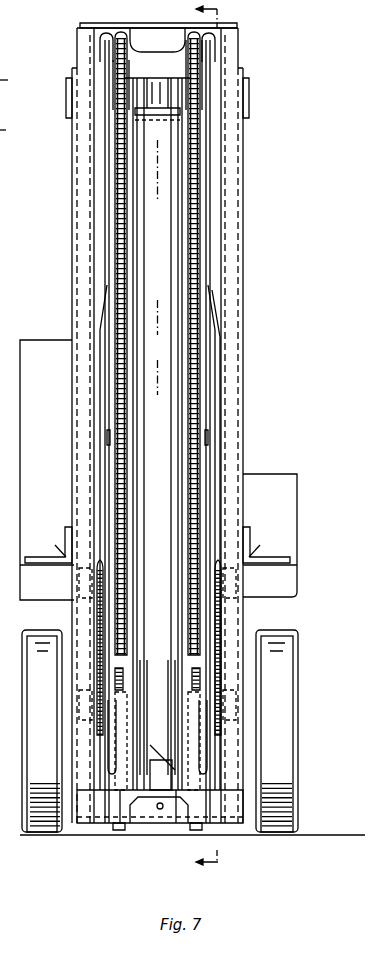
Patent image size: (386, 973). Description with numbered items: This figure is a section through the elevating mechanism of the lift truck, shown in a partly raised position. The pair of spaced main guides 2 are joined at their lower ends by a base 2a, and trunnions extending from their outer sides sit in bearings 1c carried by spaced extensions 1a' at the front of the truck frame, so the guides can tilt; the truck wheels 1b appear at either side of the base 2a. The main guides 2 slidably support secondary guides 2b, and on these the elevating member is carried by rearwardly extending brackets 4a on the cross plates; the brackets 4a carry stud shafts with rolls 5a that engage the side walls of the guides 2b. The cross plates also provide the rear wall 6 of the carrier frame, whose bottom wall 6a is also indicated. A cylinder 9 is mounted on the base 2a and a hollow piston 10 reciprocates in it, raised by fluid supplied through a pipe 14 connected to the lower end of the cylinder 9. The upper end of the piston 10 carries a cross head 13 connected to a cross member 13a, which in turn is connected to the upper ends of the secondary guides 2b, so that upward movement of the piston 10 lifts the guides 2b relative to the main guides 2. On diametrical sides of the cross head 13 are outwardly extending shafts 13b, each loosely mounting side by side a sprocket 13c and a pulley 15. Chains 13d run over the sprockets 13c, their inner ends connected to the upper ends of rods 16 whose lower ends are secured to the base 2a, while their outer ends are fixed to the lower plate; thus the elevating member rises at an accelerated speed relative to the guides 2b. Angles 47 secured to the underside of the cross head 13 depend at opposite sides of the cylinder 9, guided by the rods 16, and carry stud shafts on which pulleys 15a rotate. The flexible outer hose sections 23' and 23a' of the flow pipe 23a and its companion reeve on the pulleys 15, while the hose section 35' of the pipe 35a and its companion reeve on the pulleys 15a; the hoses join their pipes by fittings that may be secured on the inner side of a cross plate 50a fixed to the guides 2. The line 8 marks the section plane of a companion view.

The main guides 2 is at (240, 179).
The base 2a is at (238, 838).
The secondary guides 2b is at (238, 58).
The pulley 15 is at (105, 33).
The cross head 13 is at (156, 31).
The cross member 13a is at (95, 27).
The shafts 13b is at (208, 50).
The sprocket 13c is at (203, 36).
The chains 13d is at (202, 212).
The piston 10 is at (168, 718).
The cylinder 9 is at (165, 378).
The outer section of fluid flow pipe 23' is at (70, 488).
The fluid flow pipe 23a is at (252, 539).
The outer section of fluid flow pipe 23a' is at (249, 514).
The fluid flow pipe 35a is at (108, 441).
The outer section of fluid flow pipe 35' is at (245, 423).
The brackets 4a is at (100, 560).
The rolls 5a is at (90, 588).
The pulleys 15a is at (112, 766).
The angles 47 is at (172, 745).
The rear wall 6 is at (182, 802).
The rods 16 is at (120, 812).
The extensions 1a' is at (179, 472).
The bearings 1c is at (62, 560).
The wheel 1b is at (299, 785).
The pipe 14 is at (183, 854).
The section line 8 is at (198, 439).
The cross plate 50a is at (12, 83).
The bottom wall 6a is at (8, 132).